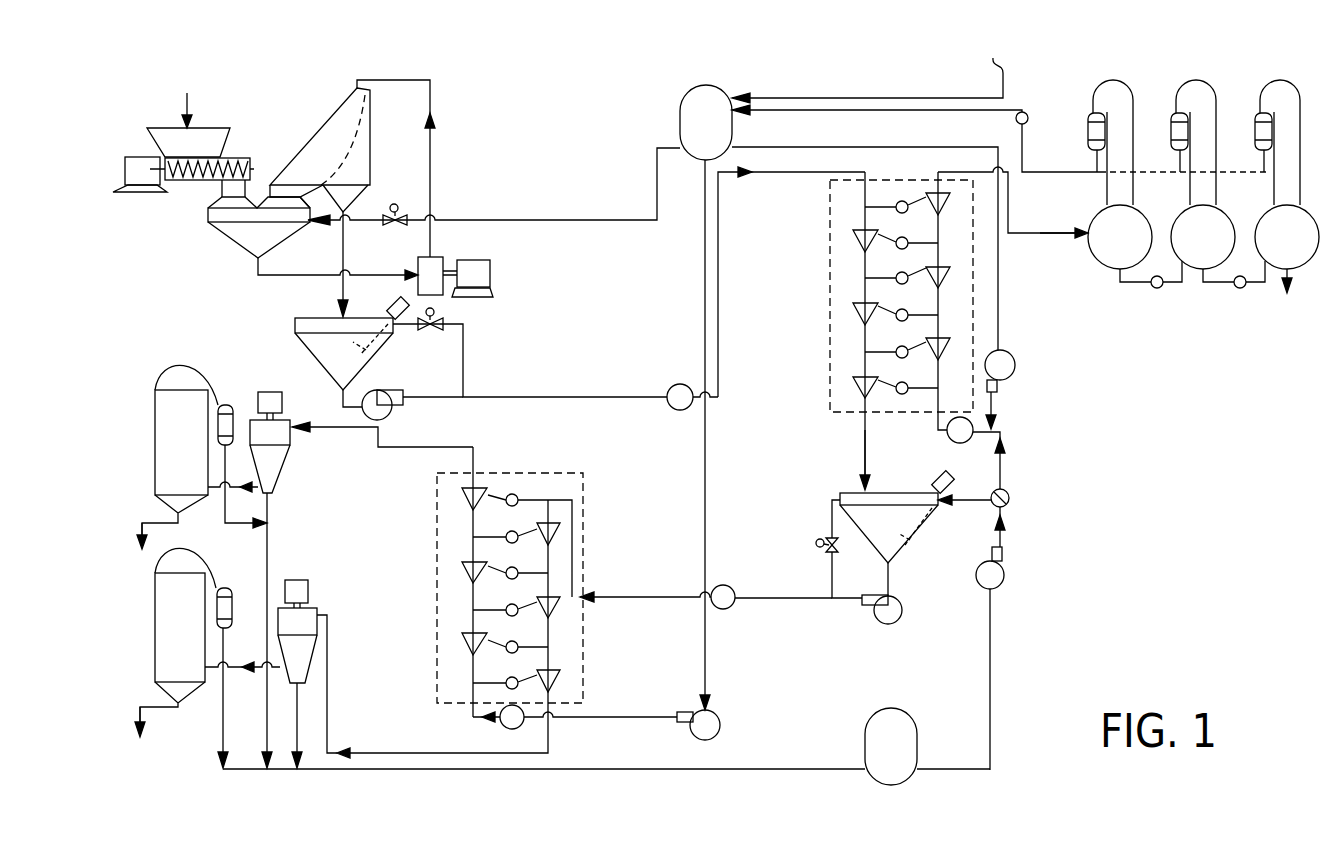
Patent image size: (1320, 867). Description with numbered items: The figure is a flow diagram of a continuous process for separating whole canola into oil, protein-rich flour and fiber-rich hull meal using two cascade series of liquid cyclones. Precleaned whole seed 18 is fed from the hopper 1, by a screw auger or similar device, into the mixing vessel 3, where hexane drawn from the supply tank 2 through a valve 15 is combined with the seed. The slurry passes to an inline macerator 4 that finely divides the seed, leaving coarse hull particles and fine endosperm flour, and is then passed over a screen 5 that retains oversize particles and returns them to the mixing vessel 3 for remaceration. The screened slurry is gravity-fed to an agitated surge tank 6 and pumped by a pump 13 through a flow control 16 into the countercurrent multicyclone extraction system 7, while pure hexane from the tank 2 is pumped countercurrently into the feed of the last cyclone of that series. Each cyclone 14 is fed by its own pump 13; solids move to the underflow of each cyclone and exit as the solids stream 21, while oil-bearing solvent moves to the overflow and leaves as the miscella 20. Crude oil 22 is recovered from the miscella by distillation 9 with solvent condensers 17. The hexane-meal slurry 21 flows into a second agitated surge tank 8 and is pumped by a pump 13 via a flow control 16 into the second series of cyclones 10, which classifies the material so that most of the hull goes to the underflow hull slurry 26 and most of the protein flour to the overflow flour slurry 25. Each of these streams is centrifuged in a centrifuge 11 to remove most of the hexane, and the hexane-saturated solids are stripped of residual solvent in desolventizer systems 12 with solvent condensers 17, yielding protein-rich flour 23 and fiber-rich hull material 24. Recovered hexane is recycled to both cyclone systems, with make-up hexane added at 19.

The hopper 1 is at (218, 128).
The supply tank 2 is at (684, 112).
The mixing vessel 3 is at (228, 234).
The macerator 4 is at (418, 257).
The screen 5 is at (336, 112).
The agitated surge tank 6 is at (308, 348).
The multicyclone extraction system 7 is at (708, 471).
The second agitated surge tank 8 is at (898, 545).
The distillation 9 is at (1103, 208).
The second series of cyclones 10 is at (586, 555).
The centrifuge 11 is at (282, 455).
The desolventizer system 12 is at (162, 400).
The pump 13 is at (392, 407).
The cyclone 14 is at (860, 318).
The valve 15 is at (395, 204).
The flow control 16 is at (680, 384).
The solvent condenser 17 is at (1165, 113).
The precleaned whole seed 18 is at (187, 95).
The make-up hexane addition 19 is at (867, 71).
The miscella 20 is at (1055, 234).
The solids 21 is at (862, 448).
The oil 22 is at (1292, 298).
The protein-rich flour 23 is at (160, 514).
The fiber-rich hull material 24 is at (160, 698).
The overflow protein-rich flour slurry 25 is at (378, 447).
The underflow hull slurry 26 is at (400, 752).